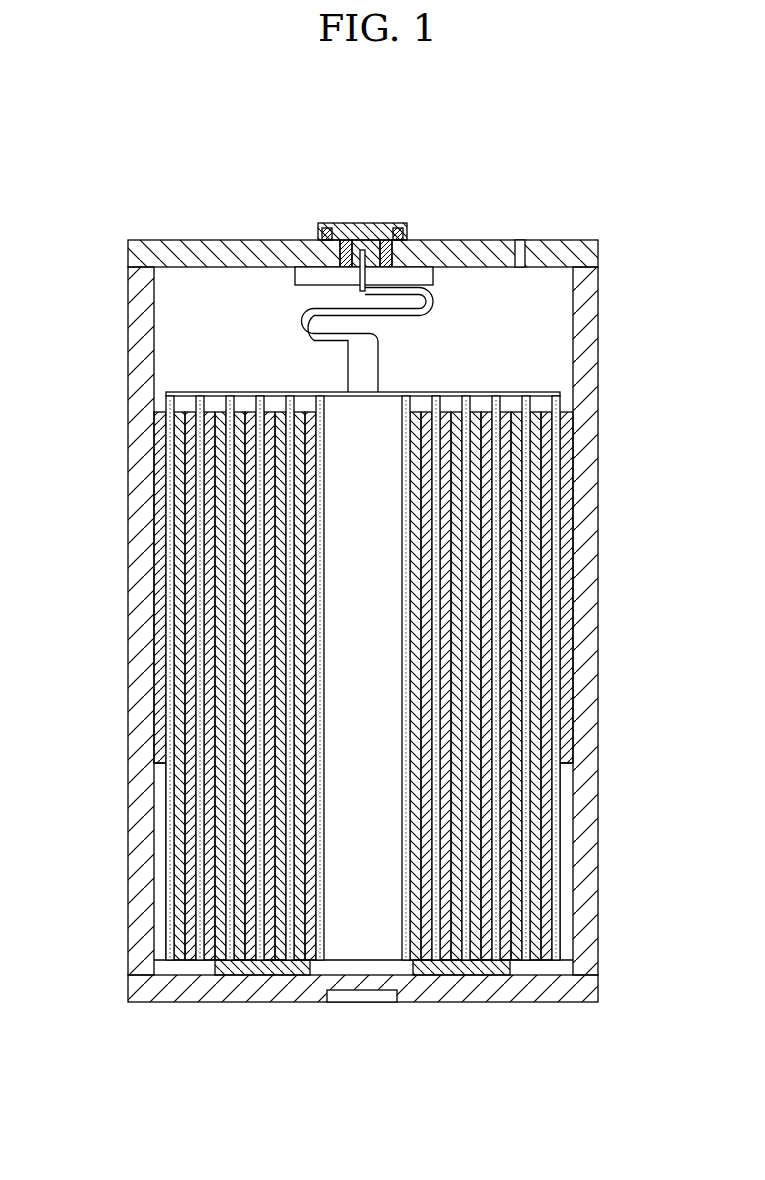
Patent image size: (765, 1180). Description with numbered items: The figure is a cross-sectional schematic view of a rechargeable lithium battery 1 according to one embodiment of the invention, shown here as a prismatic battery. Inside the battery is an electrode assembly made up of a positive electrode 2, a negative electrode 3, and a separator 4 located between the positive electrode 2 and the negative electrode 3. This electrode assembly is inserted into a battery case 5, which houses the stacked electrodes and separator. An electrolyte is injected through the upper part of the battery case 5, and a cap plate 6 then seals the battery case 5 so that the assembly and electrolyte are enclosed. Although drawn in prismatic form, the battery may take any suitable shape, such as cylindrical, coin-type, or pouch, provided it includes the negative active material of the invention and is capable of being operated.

The rechargeable lithium battery 1 is at (503, 190).
The positive electrode 2 is at (543, 805).
The negative electrode 3 is at (216, 815).
The separator 4 is at (200, 926).
The battery case 5 is at (143, 320).
The cap plate 6 is at (327, 223).